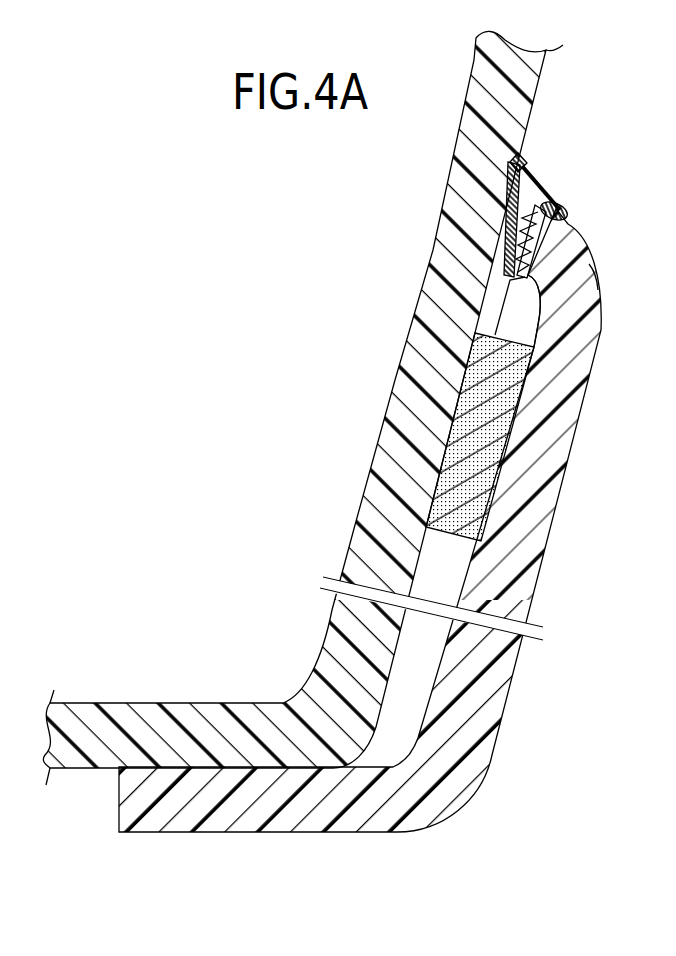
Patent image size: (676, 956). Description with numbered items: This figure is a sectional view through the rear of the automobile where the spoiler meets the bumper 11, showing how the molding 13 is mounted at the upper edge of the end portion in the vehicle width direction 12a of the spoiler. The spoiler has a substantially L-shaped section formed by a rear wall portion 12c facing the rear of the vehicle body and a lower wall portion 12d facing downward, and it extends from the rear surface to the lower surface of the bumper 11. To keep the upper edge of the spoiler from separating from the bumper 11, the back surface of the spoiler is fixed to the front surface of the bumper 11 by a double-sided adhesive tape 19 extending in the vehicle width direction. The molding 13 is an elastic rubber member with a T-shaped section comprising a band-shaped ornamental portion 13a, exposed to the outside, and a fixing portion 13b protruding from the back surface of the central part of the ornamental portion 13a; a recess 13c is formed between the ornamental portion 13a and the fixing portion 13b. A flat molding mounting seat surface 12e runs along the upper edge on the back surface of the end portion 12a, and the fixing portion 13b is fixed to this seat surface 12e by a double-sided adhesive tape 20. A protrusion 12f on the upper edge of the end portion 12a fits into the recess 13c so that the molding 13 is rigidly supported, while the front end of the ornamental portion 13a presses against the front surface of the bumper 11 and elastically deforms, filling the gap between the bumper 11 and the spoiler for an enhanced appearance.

The bumper 11 is at (400, 398).
The end portion in the vehicle width direction 12a is at (351, 511).
The rear wall portion 12c is at (543, 452).
The lower wall portion 12d is at (185, 822).
The molding mounting seat surface 12e is at (516, 311).
The protrusion 12f is at (563, 206).
The molding 13 is at (514, 227).
The ornamental portion 13a is at (538, 192).
The fixing portion 13b is at (505, 245).
The recess 13c is at (530, 260).
The double-sided adhesive tape 19 is at (457, 522).
The double-sided adhesive tape 20 is at (540, 250).